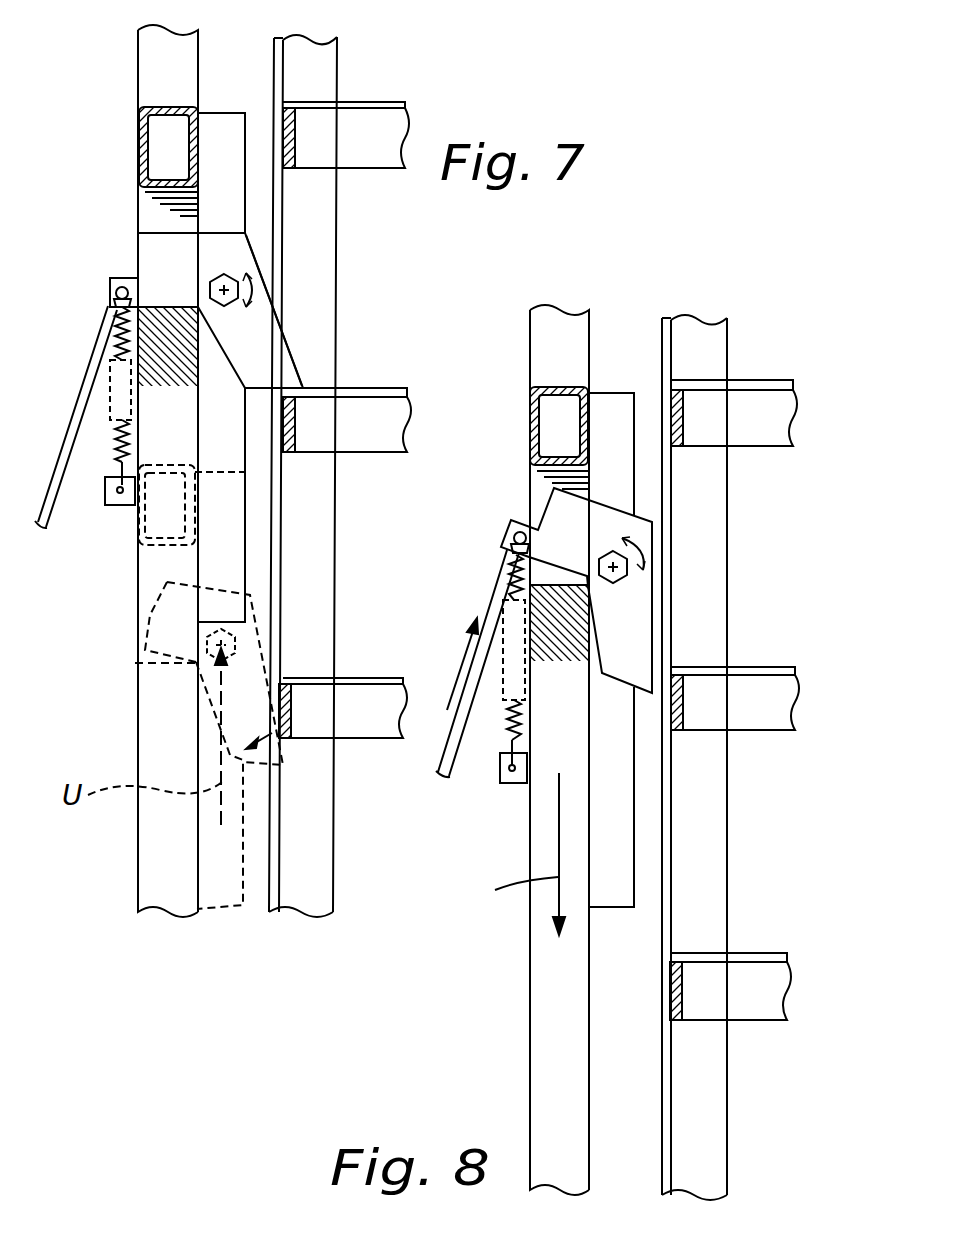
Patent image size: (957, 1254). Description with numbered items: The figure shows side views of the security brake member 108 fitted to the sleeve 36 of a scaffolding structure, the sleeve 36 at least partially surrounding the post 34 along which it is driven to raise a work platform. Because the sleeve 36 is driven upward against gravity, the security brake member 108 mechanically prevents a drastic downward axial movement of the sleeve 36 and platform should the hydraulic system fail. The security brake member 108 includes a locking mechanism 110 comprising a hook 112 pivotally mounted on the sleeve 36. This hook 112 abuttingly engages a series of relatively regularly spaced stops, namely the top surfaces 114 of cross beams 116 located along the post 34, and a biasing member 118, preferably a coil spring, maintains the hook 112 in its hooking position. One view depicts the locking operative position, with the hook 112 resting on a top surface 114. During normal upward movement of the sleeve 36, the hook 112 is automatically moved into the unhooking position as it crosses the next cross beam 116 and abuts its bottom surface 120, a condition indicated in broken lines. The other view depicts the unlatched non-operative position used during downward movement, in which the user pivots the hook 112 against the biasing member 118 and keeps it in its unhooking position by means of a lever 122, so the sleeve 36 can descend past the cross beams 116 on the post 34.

In FIG. 7, the post 34 is at (322, 73).
In FIG. 8, the post 34 is at (700, 325).
In FIG. 7, the sleeve 36 is at (148, 66).
In FIG. 8, the sleeve 36 is at (537, 340).
In FIG. 7, the security brake member 108 is at (112, 284).
In FIG. 8, the security brake member 108 is at (512, 519).
In FIG. 7, the locking mechanism 110 is at (145, 252).
In FIG. 8, the locking mechanism 110 is at (540, 500).
In FIG. 7, the hook 112 is at (270, 338).
In FIG. 8, the hook 112 is at (640, 623).
In FIG. 7, the top surface 114 is at (390, 387).
In FIG. 8, the top surface 114 is at (762, 667).
In FIG. 7, the cross beam 116 is at (377, 153).
In FIG. 8, the cross beam 116 is at (768, 715).
In FIG. 7, the biasing member 118 is at (112, 440).
In FIG. 8, the biasing member 118 is at (503, 715).
In FIG. 7, the bottom surface 120 is at (283, 765).
In FIG. 7, the lever 122 is at (78, 408).
In FIG. 8, the lever 122 is at (498, 610).